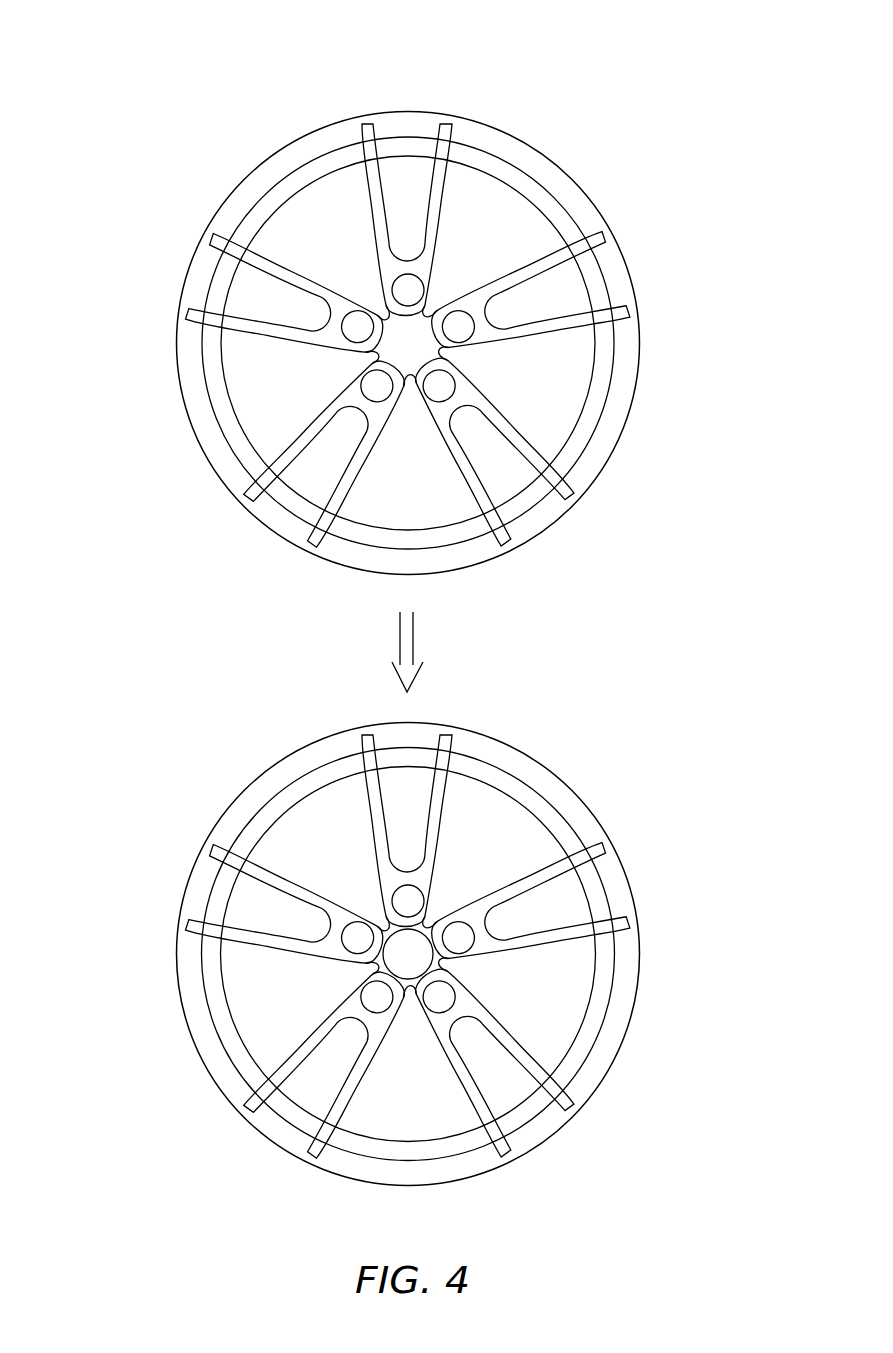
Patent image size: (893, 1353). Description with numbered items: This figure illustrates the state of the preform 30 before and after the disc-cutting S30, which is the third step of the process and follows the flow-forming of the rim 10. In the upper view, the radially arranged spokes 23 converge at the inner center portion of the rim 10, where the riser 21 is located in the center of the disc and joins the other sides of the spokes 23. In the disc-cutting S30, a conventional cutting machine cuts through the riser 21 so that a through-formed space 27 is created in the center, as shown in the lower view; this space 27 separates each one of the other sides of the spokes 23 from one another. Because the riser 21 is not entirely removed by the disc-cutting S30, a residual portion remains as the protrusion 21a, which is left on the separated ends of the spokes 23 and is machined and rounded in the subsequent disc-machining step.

The rim 10 is at (466, 649).
The riser 21 is at (345, 256).
The protrusion 21a is at (329, 883).
The spokes 23 is at (349, 641).
The space 27 is at (407, 960).
The preform 30 is at (754, 700).
The disc-cutting S30 is at (433, 39).